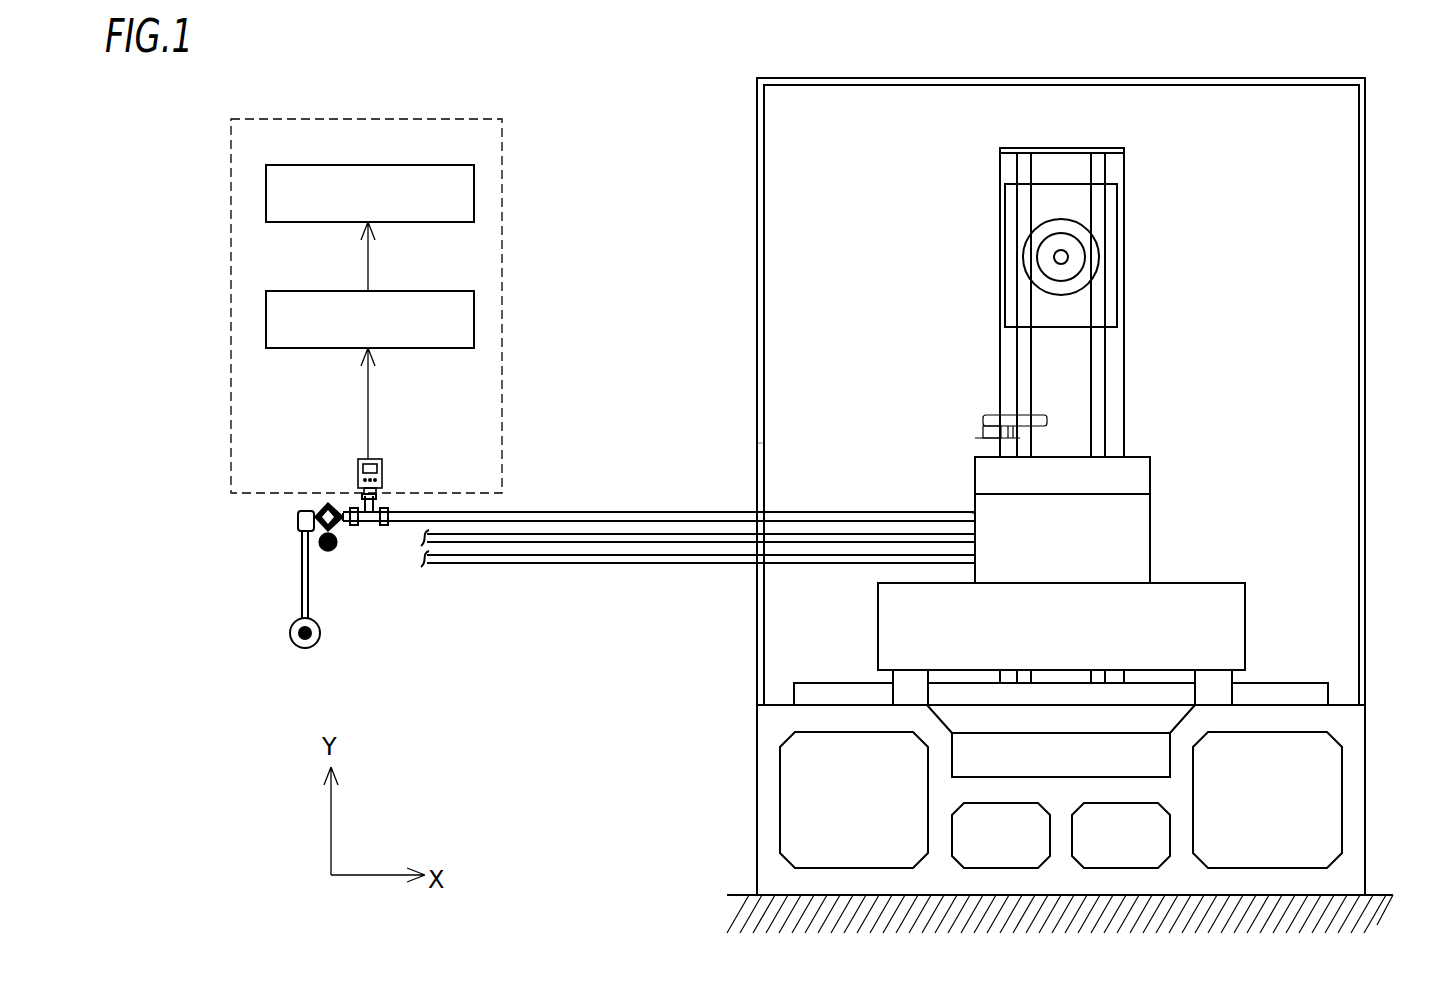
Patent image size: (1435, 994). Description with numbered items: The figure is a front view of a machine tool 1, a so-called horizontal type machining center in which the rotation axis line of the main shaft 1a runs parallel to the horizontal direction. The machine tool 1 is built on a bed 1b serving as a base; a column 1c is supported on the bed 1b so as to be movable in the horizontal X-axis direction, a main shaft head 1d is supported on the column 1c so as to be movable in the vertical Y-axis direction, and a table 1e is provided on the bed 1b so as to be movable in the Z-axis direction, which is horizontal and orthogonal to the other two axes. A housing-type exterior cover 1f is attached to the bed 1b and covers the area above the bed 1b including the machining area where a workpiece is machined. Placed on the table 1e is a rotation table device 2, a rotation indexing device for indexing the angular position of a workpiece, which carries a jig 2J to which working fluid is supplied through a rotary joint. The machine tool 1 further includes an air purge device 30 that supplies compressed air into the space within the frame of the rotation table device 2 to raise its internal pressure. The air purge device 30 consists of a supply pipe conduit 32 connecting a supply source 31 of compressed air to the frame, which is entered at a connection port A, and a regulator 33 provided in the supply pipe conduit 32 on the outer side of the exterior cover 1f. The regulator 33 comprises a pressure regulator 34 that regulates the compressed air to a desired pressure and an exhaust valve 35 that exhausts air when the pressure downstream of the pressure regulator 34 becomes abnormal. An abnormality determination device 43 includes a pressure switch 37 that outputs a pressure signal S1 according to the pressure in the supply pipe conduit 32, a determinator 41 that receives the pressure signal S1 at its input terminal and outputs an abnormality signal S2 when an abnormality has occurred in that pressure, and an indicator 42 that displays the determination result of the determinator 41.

The machine tool 1 is at (1382, 162).
The main shaft 1a is at (1066, 252).
The bed 1b is at (757, 738).
The column 1c is at (1000, 155).
The main shaft head 1d is at (1040, 240).
The table 1e is at (878, 637).
The exterior cover 1f is at (757, 443).
The rotation table device 2 is at (1158, 462).
The jig 2J is at (983, 418).
The connection port A is at (973, 513).
The air purge device 30 is at (287, 550).
The supply source 31 is at (302, 648).
The supply pipe conduit 32 is at (697, 513).
The regulator 33 is at (339, 555).
The pressure regulator 34 is at (329, 553).
The exhaust valve 35 is at (338, 530).
The pressure switch 37 is at (380, 460).
The determinator 41 is at (475, 320).
The indicator 42 is at (475, 193).
The abnormality determination device 43 is at (231, 185).
The pressure signal S1 is at (367, 440).
The abnormality signal S2 is at (367, 266).